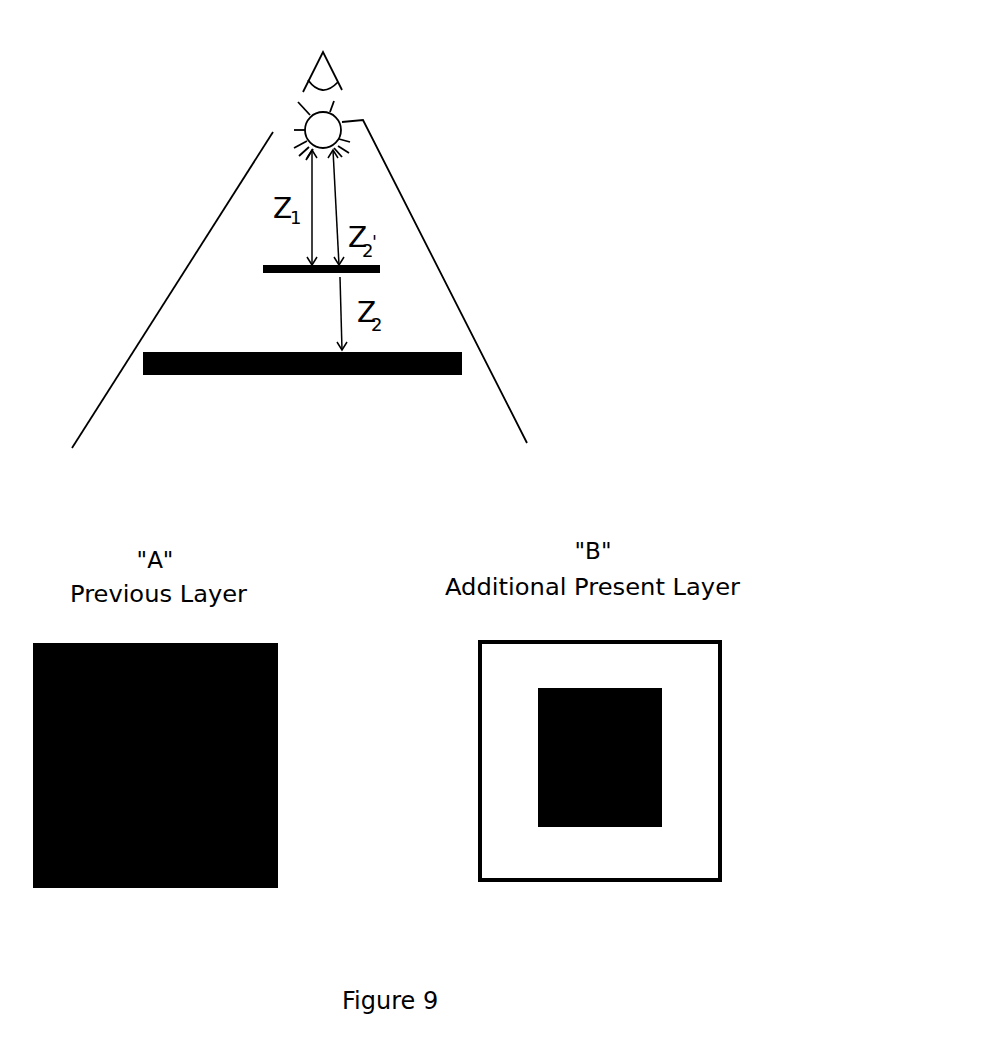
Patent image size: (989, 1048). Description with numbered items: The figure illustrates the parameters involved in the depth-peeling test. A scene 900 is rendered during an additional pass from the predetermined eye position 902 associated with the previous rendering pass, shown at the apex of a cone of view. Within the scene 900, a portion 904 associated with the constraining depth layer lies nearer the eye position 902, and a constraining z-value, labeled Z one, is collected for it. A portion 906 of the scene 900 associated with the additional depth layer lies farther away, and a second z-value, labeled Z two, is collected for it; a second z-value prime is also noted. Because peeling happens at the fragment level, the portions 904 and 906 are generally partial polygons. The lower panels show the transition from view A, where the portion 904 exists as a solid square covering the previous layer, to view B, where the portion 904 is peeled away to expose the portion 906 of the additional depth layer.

The scene 900 is at (760, 213).
The eye position 902 is at (345, 90).
The portion of the scene associated with the constraining depth layer 904 is at (275, 273).
The portion of the scene associated with the additional depth layer 906 is at (372, 375).